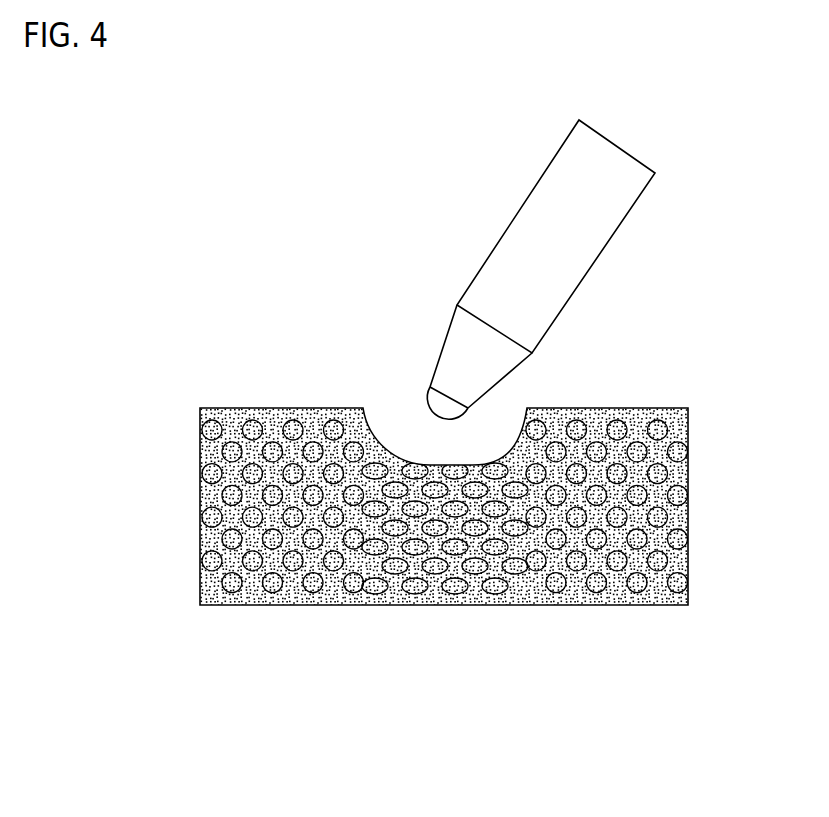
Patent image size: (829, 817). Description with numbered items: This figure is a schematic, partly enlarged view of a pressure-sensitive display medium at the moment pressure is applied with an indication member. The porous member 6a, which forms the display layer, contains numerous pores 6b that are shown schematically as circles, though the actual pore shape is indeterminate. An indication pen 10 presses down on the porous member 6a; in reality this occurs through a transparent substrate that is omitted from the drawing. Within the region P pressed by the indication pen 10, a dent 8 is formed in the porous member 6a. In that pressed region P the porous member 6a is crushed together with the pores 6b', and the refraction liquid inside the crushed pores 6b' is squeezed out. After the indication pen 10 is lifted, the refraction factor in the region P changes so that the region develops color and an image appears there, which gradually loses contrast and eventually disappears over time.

The porous member 6a is at (203, 598).
The pores 6b is at (411, 506).
The crushed pores 6b' is at (483, 479).
The dent 8 is at (399, 399).
The indication pen 10 is at (500, 251).
The region P is at (527, 616).